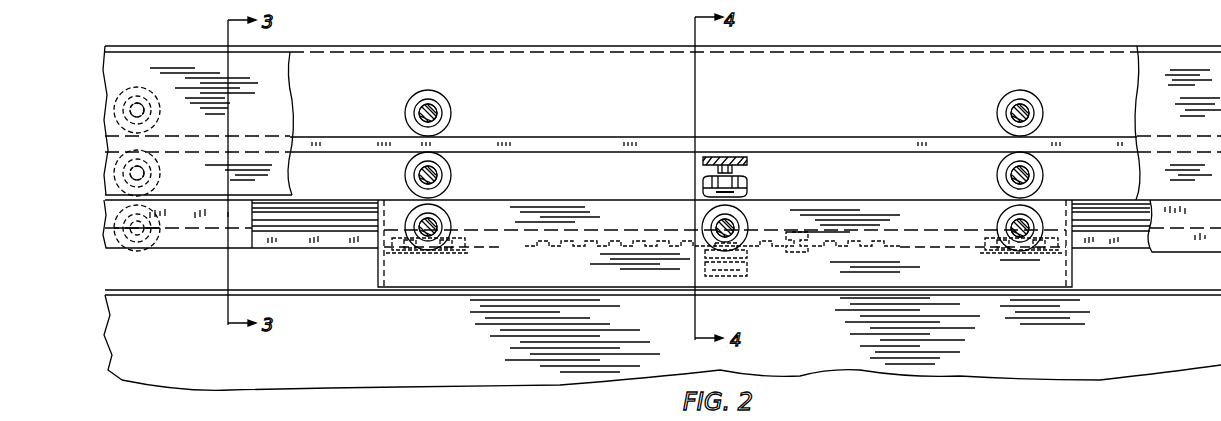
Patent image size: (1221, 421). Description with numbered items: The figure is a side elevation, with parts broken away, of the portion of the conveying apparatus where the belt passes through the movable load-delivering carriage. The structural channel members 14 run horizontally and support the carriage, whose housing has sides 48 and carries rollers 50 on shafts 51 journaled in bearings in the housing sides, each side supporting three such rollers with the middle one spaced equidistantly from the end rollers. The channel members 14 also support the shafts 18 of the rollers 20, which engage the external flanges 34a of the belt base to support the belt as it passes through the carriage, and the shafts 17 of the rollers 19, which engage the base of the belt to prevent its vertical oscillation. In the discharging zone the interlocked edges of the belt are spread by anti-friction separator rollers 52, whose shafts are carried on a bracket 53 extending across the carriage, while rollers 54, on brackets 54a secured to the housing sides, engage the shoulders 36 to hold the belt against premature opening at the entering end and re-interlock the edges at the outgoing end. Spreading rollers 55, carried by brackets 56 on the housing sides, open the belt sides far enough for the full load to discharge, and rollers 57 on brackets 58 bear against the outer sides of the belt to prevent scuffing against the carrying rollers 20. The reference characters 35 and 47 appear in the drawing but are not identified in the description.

The channel members 14 is at (824, 72).
The shafts 17 is at (148, 108).
The shafts 18 is at (418, 175).
The rollers 19 is at (138, 97).
The rollers 20 is at (160, 172).
The external flanges 34a is at (616, 137).
The intermediate slide member 35 is at (663, 181).
The shoulders 36 is at (1105, 243).
The lower channel flange 47 is at (1185, 285).
The sides 48 is at (795, 275).
The rollers 50 is at (446, 225).
The shafts 51 is at (433, 222).
The rollers 52 is at (798, 232).
The bracket 53 is at (800, 250).
The rollers 54 is at (445, 252).
The brackets 54a is at (422, 264).
The spreading rollers 55 is at (705, 245).
The brackets 56 is at (700, 278).
The rollers 57 is at (750, 185).
The brackets 58 is at (750, 162).